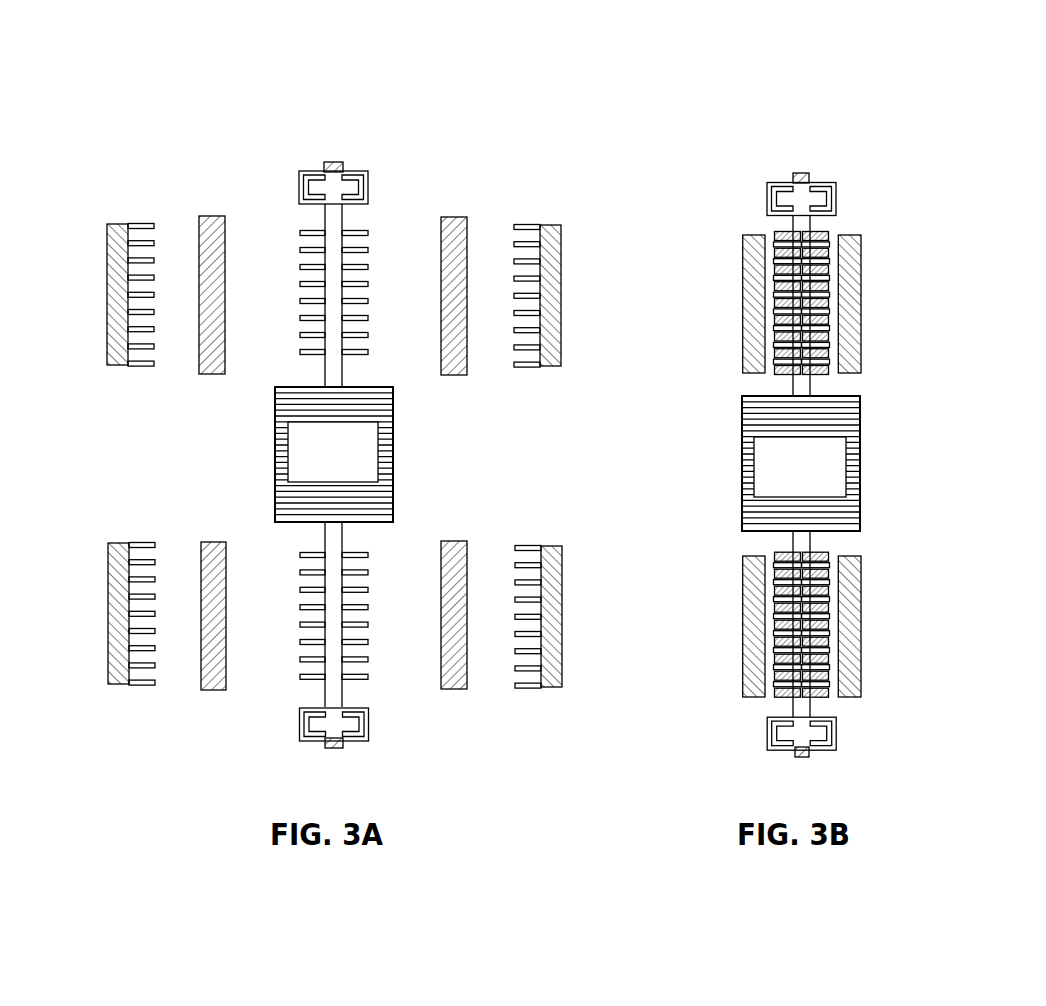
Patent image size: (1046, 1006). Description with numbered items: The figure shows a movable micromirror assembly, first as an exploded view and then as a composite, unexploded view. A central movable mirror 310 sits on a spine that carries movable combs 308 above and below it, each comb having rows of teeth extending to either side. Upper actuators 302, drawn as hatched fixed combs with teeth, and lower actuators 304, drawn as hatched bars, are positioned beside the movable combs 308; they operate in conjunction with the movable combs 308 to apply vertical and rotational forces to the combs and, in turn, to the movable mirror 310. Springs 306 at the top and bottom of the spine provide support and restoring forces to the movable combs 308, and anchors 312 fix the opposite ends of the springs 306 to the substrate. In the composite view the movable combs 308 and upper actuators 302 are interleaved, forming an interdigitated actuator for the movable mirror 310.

In FIG. 3A, the upper actuators 302 is at (562, 545).
In FIG. 3A, the lower actuators 304 is at (468, 543).
In FIG. 3A, the springs 306 is at (300, 712).
In FIG. 3A, the movable combs 308 is at (368, 352).
In FIG. 3A, the movable mirror 310 is at (334, 454).
In FIG. 3B, the movable mirror 310 is at (801, 463).
In FIG. 3B, the anchors 312 is at (808, 757).